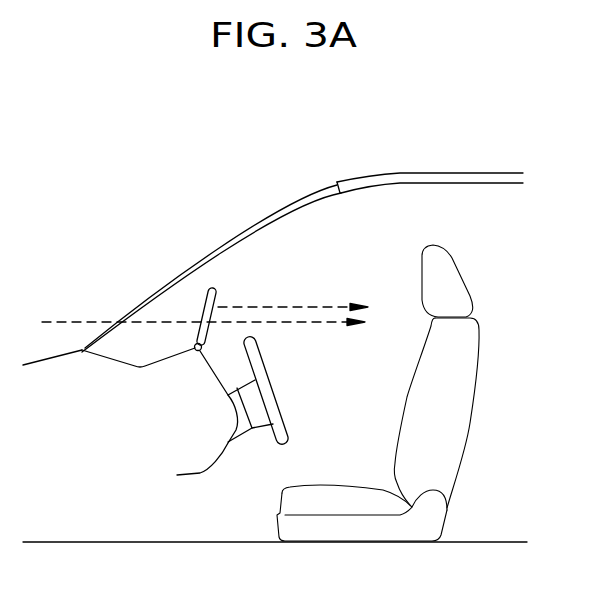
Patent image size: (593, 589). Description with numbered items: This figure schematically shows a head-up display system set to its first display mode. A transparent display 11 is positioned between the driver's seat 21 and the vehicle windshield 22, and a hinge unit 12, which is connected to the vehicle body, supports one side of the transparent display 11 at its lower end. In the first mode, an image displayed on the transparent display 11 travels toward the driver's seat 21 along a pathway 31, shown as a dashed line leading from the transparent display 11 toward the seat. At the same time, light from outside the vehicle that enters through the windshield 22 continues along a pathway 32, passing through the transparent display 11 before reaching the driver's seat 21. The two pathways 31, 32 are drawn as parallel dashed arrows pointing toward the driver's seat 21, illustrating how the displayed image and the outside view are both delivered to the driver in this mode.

The transparent display 11 is at (207, 289).
The hinge unit 12 is at (197, 352).
The driver's seat 21 is at (456, 417).
The vehicle windshield 22 is at (227, 241).
The pathway 31 is at (284, 306).
The pathway 32 is at (152, 322).